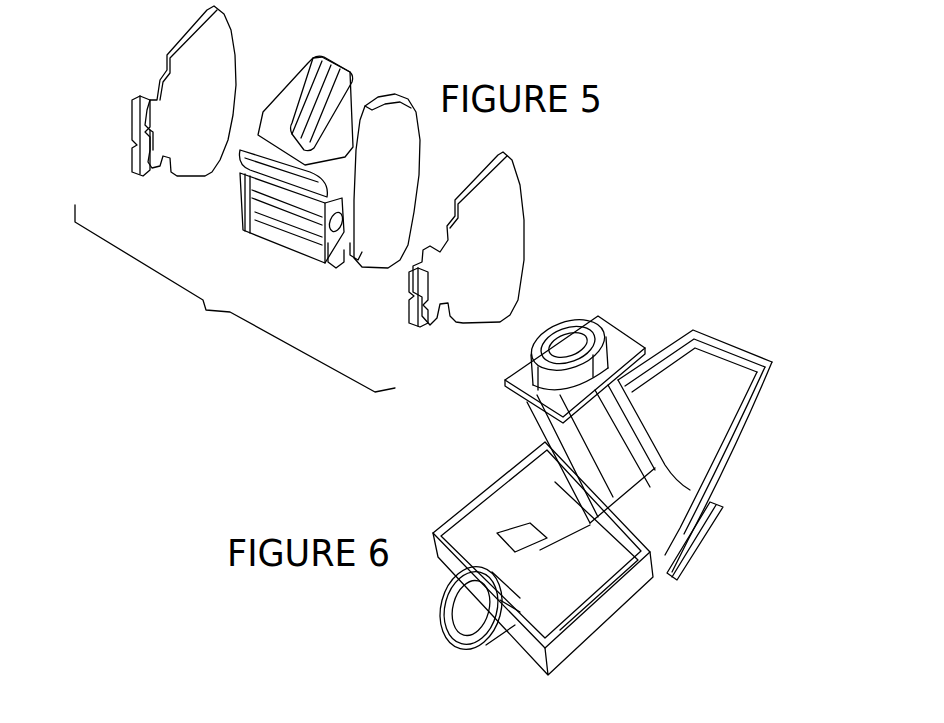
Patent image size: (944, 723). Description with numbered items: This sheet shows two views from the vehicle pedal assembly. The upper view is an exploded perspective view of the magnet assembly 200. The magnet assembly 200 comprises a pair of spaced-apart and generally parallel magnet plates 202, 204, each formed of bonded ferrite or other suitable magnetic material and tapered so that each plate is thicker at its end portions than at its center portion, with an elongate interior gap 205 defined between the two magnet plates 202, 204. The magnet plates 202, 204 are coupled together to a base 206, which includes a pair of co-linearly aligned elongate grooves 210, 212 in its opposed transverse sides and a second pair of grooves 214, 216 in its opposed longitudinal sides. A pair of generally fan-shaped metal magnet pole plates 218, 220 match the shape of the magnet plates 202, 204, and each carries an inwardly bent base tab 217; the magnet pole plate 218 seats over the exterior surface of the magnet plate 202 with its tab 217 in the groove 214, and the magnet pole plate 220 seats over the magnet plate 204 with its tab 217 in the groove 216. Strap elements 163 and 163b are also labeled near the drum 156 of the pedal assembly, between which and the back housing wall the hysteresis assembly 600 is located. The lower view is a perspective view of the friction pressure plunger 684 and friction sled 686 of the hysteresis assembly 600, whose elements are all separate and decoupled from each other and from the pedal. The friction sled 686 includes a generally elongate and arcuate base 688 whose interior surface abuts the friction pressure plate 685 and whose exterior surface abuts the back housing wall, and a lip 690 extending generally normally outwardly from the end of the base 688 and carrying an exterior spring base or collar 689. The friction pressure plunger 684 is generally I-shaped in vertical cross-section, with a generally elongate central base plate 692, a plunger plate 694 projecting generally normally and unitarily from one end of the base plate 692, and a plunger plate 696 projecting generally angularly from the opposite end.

In FIG. 5, the drum 156 is at (523, 0).
In FIG. 5, the strap end 163 is at (369, 11).
In FIG. 5, the strap end portion 163b is at (455, 0).
In FIG. 5, the magnet assembly 200 is at (235, 298).
In FIG. 5, the magnet plate 202 is at (300, 87).
In FIG. 5, the magnet plate 204 is at (367, 113).
In FIG. 5, the interior gap 205 is at (362, 83).
In FIG. 5, the base 206 is at (282, 150).
In FIG. 5, the groove 210 is at (330, 258).
In FIG. 5, the groove 212 is at (300, 170).
In FIG. 5, the groove 214 is at (253, 197).
In FIG. 5, the groove 216 is at (312, 222).
In FIG. 5, the base tab 217 is at (137, 143).
In FIG. 5, the magnet pole plate 218 is at (187, 37).
In FIG. 5, the magnet pole plate 220 is at (512, 173).
In FIG. 6, the hysteresis assembly 600 is at (693, 262).
In FIG. 6, the friction pressure plunger 684 is at (615, 330).
In FIG. 6, the friction pressure plate 685 is at (708, 523).
In FIG. 6, the friction sled 686 is at (758, 418).
In FIG. 6, the base 688 is at (618, 593).
In FIG. 6, the spring base 689 is at (440, 578).
In FIG. 6, the lip 690 is at (523, 597).
In FIG. 6, the central base plate 692 is at (640, 437).
In FIG. 6, the plunger plate 694 is at (645, 350).
In FIG. 6, the plunger plate 696 is at (655, 528).